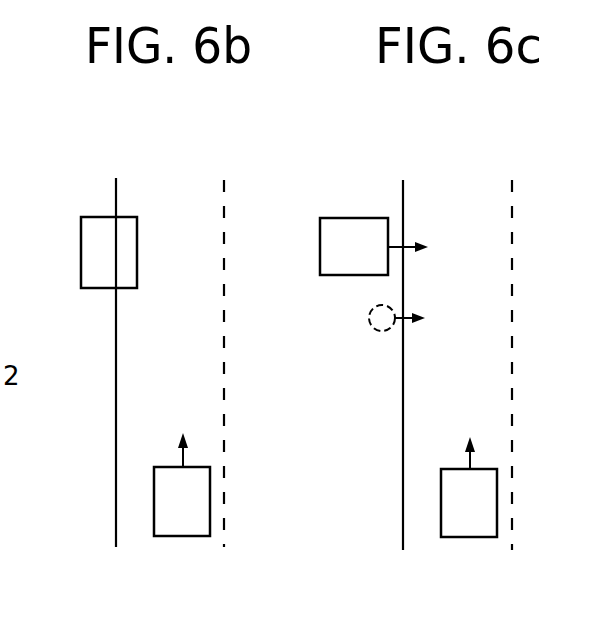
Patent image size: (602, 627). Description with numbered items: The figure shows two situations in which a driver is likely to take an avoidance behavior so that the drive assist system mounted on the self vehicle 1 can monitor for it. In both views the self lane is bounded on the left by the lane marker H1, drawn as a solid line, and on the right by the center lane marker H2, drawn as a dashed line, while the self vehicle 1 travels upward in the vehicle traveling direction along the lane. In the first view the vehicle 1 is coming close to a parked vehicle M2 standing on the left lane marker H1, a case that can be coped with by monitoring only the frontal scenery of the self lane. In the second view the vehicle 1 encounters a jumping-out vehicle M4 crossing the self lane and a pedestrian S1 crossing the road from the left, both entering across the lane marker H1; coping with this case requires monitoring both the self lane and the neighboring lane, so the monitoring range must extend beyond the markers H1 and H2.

In FIG. 6b, the vehicle 1 is at (178, 536).
In FIG. 6c, the vehicle 1 is at (465, 537).
In FIG. 6b, the lane marker H1 is at (115, 476).
In FIG. 6c, the lane marker H1 is at (402, 476).
In FIG. 6b, the lane marker H2 is at (225, 406).
In FIG. 6c, the lane marker H2 is at (513, 386).
In FIG. 6b, the parked vehicle M2 is at (81, 257).
In FIG. 6c, the vehicle crossing the self lane M4 is at (320, 262).
In FIG. 6c, the pedestrian crossing the road S1 is at (369, 318).